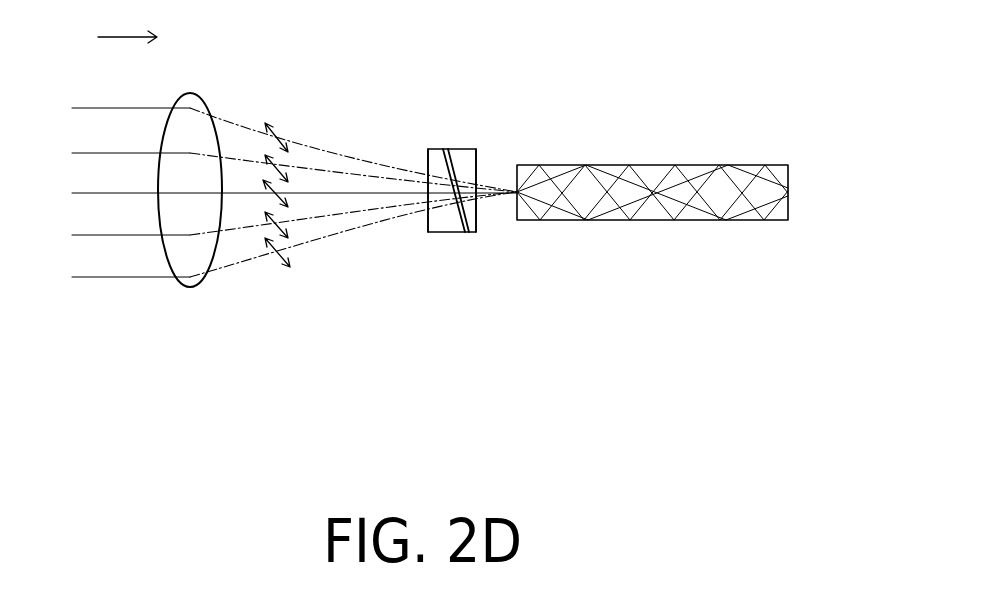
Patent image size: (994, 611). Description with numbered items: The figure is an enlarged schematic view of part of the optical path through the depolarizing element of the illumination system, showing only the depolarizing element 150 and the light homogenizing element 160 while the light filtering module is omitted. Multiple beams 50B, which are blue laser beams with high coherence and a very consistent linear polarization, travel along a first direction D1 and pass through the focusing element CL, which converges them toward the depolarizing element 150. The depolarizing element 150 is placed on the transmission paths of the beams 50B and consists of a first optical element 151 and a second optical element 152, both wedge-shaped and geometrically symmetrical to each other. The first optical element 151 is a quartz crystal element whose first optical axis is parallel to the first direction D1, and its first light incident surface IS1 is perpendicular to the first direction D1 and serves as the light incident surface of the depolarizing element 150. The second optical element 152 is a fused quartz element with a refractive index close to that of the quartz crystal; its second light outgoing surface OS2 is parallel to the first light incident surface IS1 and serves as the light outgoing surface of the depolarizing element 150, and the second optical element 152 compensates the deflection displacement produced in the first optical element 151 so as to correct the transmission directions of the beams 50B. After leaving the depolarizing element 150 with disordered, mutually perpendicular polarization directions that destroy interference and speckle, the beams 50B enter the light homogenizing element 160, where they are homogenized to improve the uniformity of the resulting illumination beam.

The first direction D1 is at (127, 21).
The beams 50B is at (103, 240).
The focusing element CL is at (194, 99).
The depolarizing element 150 is at (448, 127).
The first optical element 151 is at (433, 146).
The second optical element 152 is at (462, 146).
The first light incident surface IS1 is at (424, 232).
The second light outgoing surface OS2 is at (491, 233).
The light homogenizing element 160 is at (775, 220).